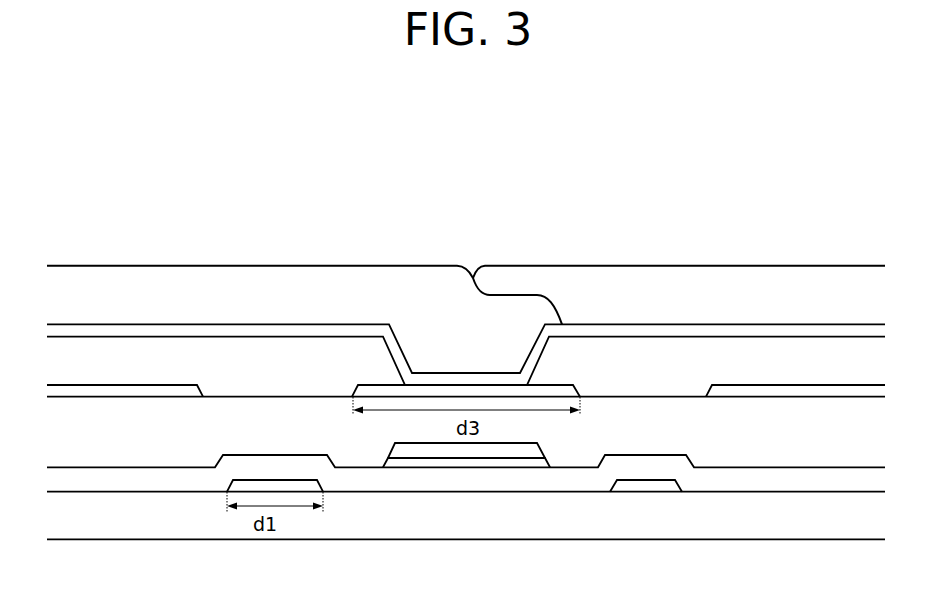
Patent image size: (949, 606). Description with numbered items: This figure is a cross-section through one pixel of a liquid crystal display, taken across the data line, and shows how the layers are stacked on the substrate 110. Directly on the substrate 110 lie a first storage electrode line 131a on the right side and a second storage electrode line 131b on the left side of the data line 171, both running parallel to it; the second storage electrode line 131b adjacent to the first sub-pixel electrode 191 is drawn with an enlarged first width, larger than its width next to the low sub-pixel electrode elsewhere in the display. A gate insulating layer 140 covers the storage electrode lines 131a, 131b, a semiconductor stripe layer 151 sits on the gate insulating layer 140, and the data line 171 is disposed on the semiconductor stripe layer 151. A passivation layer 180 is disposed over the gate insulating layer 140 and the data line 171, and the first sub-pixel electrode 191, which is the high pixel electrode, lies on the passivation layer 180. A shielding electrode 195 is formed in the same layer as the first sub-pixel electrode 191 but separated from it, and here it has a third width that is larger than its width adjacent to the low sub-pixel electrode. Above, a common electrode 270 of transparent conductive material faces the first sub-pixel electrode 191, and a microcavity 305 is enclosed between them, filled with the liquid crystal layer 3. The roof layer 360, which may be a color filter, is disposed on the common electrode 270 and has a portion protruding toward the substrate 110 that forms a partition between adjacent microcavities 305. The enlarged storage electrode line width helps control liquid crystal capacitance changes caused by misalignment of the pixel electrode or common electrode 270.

The liquid crystal layer 3 is at (863, 357).
The substrate 110 is at (358, 525).
The first storage electrode line 131a is at (645, 485).
The second storage electrode line 131b is at (290, 486).
The gate insulating layer 140 is at (192, 485).
The semiconductor stripe layer 151 is at (435, 463).
The data line 171 is at (490, 452).
The passivation layer 180 is at (580, 438).
The first sub-pixel electrode 191 is at (118, 389).
The shielding electrode 195 is at (570, 387).
The common electrode 270 is at (294, 330).
The microcavity 305 is at (175, 357).
The roof layer 360 is at (375, 283).